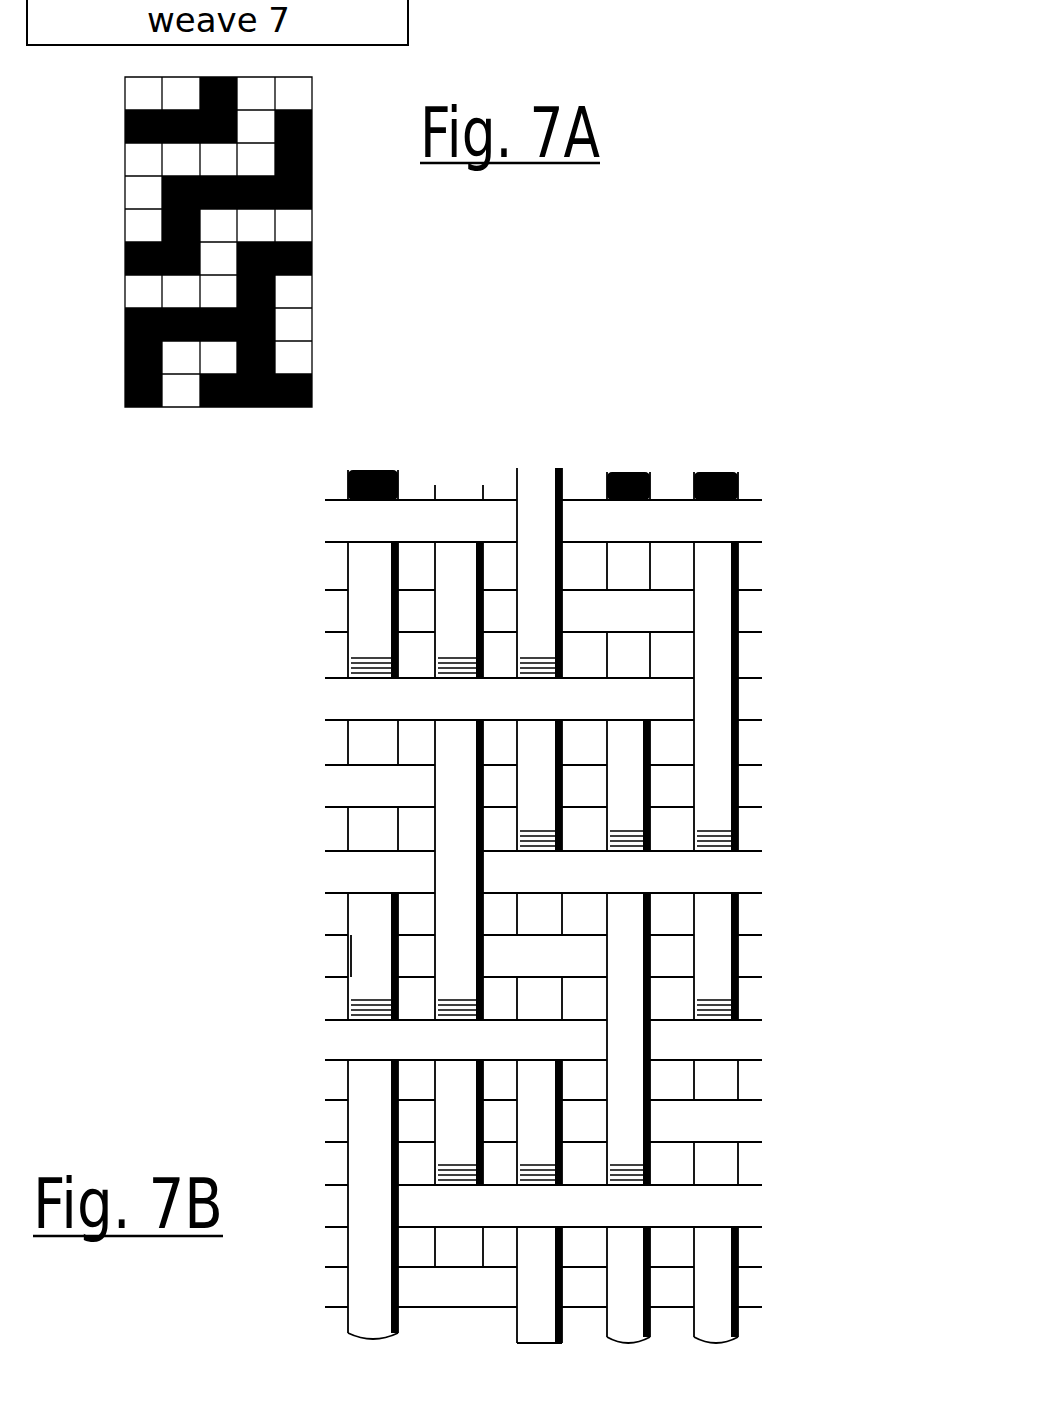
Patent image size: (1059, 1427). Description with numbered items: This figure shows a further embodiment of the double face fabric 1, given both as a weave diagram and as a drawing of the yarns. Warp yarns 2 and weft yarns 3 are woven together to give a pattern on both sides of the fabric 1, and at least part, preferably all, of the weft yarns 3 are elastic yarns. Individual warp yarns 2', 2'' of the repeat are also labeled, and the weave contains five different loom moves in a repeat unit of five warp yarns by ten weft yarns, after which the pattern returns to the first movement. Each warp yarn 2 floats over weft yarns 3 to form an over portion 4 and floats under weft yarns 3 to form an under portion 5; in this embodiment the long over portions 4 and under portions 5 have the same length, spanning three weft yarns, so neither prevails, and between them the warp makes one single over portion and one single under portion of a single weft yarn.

In FIG. 7B, the woven fabric 1 is at (235, 566).
In FIG. 7B, the warp yarn 2 is at (455, 844).
In FIG. 7A, the warp thread of first type 2' is at (240, 427).
In FIG. 7B, the warp thread of first type 2' is at (642, 838).
In FIG. 7A, the warp thread of second type 2'' is at (356, 346).
In FIG. 7B, the warp thread of second type 2'' is at (757, 856).
In FIG. 7B, the weft yarn 3 is at (350, 780).
In FIG. 7B, the over portion 4 is at (337, 820).
In FIG. 7B, the under portion 5 is at (327, 948).